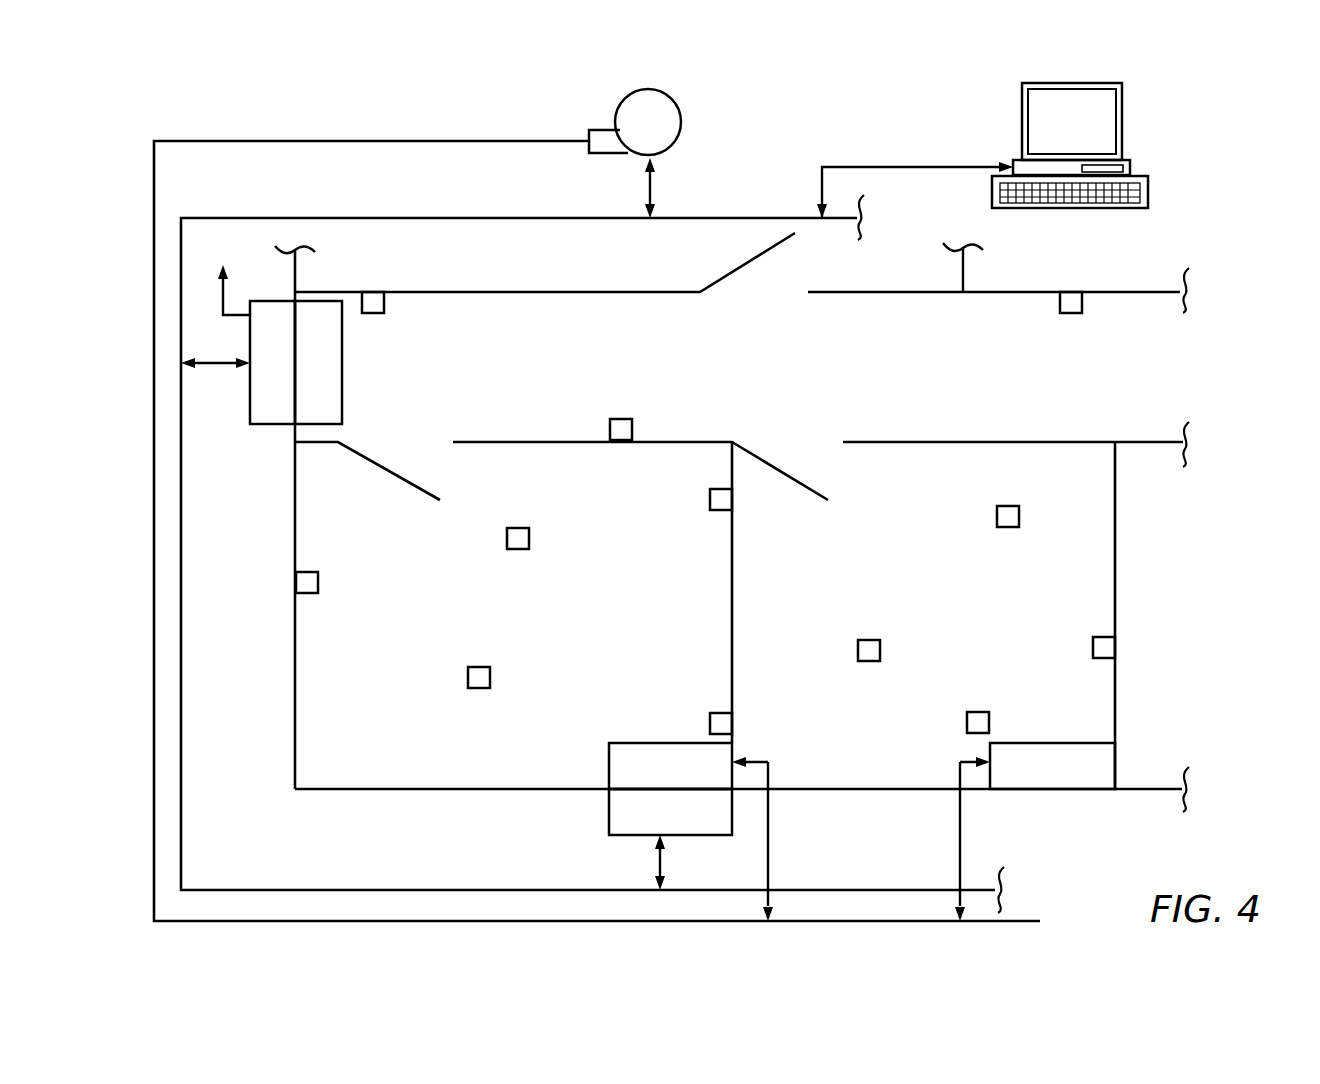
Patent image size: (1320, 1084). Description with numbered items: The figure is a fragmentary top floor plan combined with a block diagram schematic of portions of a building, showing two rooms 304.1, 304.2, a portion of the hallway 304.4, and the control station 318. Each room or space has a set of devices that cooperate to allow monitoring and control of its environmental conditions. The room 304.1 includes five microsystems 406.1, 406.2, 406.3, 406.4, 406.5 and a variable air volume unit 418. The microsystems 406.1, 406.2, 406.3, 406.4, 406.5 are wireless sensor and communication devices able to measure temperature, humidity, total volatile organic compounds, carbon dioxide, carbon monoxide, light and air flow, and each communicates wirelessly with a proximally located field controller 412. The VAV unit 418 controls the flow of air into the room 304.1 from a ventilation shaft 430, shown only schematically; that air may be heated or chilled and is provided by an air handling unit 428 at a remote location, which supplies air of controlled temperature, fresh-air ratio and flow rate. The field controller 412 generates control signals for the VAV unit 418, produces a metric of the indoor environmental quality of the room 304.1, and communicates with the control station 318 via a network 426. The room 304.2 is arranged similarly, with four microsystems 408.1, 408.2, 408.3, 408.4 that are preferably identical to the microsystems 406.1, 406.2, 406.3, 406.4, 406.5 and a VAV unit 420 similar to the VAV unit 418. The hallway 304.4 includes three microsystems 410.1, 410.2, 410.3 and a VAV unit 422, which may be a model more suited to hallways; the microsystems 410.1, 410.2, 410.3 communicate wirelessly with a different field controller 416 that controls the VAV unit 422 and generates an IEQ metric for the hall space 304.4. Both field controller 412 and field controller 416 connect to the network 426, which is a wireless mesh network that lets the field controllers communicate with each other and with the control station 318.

The room 304.1 is at (742, 627).
The room 304.2 is at (992, 605).
The hallway 304.4 is at (732, 511).
The control station 318 is at (1022, 158).
The microsystem 406.1 is at (710, 512).
The microsystem 406.2 is at (529, 528).
The microsystem 406.3 is at (490, 667).
The microsystem 406.4 is at (732, 713).
The microsystem 406.5 is at (296, 570).
The microsystem 408.1 is at (880, 640).
The microsystem 408.2 is at (1018, 506).
The microsystem 408.3 is at (1115, 637).
The microsystem 408.4 is at (988, 712).
The microsystem 410.1 is at (1060, 312).
The microsystem 410.2 is at (632, 419).
The microsystem 410.3 is at (384, 313).
The field controller 412 is at (670, 839).
The field controller 416 is at (261, 344).
The variable air volume unit 418 is at (691, 832).
The VAV unit 420 is at (1035, 832).
The VAV unit 422 is at (318, 362).
The network 426 is at (837, 890).
The air handling unit 428 is at (681, 102).
The ventilation shaft 430 is at (417, 141).